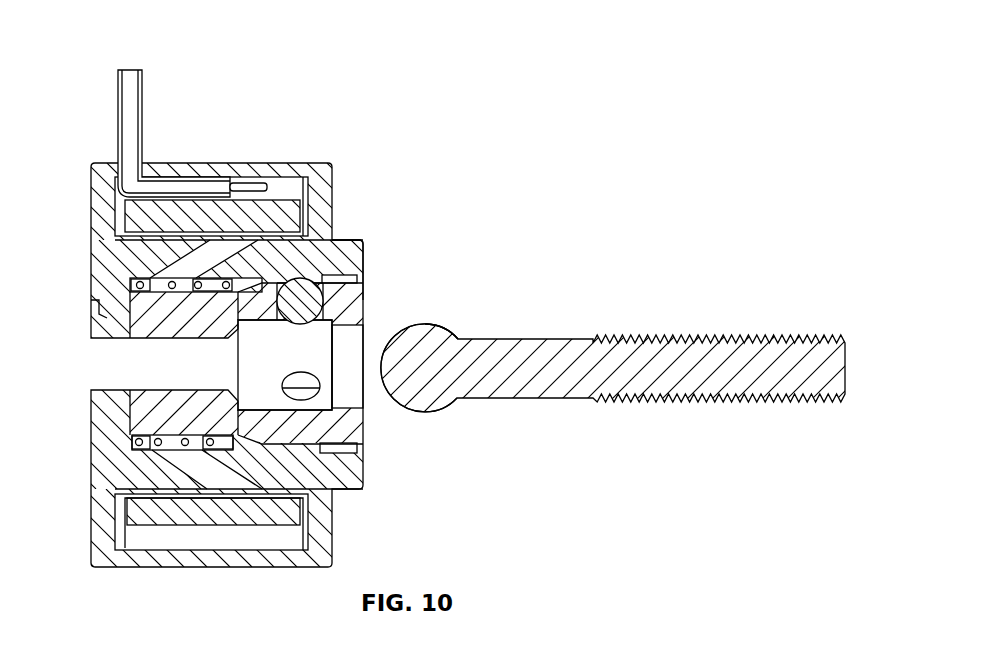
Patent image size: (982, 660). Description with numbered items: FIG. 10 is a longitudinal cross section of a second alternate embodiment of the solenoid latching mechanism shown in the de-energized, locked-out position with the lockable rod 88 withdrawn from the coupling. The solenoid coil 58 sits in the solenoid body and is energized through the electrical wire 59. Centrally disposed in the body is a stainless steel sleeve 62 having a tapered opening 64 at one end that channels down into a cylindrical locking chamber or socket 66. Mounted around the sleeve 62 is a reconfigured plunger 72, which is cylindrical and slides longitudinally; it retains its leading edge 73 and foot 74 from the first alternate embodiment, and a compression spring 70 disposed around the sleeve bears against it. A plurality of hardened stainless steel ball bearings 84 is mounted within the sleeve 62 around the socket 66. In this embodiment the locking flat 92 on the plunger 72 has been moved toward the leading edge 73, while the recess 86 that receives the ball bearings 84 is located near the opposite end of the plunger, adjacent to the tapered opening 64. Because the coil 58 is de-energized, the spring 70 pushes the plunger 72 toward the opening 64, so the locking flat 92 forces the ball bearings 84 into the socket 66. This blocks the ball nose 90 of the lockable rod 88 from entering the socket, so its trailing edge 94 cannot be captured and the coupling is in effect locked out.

The solenoid coil 58 is at (137, 217).
The electrical wire 59 is at (143, 82).
The sleeve 62 is at (107, 327).
The tapered opening 64 is at (348, 325).
The locking chamber or socket 66 is at (325, 370).
The compression spring 70 is at (138, 270).
The plunger 72 is at (365, 247).
The leading edge 73 is at (173, 262).
The foot 74 is at (245, 283).
The ball bearings 84 is at (318, 284).
The recess 86 is at (320, 293).
The lockable rod 88 is at (728, 353).
The ball nose 90 is at (443, 335).
The locking flat 92 is at (290, 282).
The trailing edge 94 is at (443, 325).